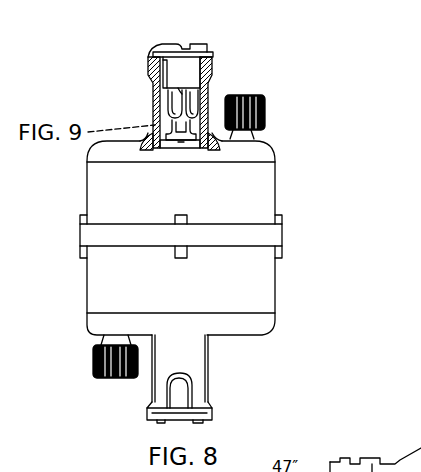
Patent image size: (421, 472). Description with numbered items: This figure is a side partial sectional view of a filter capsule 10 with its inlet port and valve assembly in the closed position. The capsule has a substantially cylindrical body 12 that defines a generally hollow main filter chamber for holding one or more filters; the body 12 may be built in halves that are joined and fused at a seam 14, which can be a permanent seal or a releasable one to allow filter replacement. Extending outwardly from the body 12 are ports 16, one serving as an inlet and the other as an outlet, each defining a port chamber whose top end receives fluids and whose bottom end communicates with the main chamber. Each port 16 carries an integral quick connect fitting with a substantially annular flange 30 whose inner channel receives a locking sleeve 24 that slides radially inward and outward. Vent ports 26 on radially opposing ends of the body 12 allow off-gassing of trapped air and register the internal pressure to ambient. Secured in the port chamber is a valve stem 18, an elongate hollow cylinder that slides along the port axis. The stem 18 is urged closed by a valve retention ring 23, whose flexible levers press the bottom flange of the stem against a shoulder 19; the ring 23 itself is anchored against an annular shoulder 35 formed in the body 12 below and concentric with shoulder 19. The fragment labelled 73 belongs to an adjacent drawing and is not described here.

The filter capsule 10 is at (282, 96).
The capsule body 12 is at (275, 205).
The seam 14 is at (282, 241).
The port 16 is at (210, 78).
The valve stem 18 is at (178, 88).
The shoulder 19 is at (166, 124).
The valve retention ring 23 is at (182, 144).
The locking sleeve 24 is at (155, 46).
The vent port 26 is at (265, 118).
The annular flange 30 is at (214, 55).
The annular shoulder 35 is at (165, 148).
The fragment element 73 is at (354, 460).